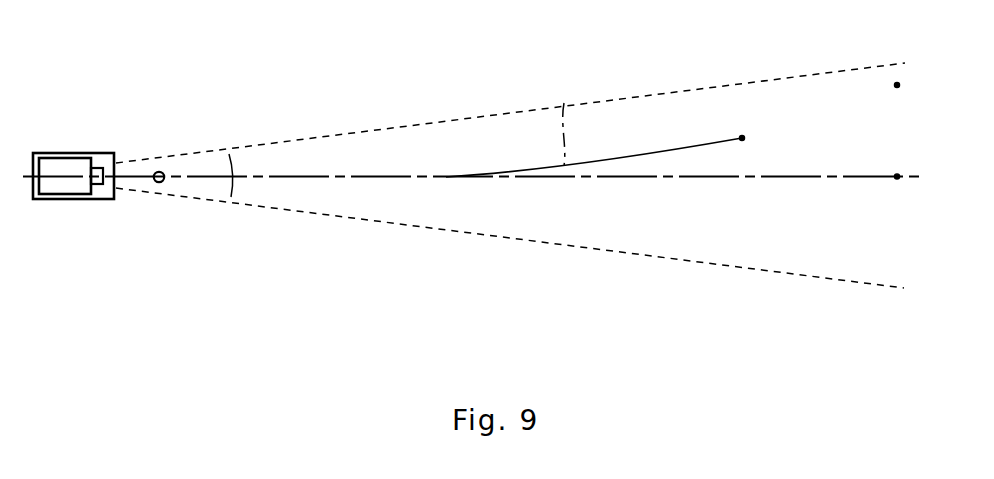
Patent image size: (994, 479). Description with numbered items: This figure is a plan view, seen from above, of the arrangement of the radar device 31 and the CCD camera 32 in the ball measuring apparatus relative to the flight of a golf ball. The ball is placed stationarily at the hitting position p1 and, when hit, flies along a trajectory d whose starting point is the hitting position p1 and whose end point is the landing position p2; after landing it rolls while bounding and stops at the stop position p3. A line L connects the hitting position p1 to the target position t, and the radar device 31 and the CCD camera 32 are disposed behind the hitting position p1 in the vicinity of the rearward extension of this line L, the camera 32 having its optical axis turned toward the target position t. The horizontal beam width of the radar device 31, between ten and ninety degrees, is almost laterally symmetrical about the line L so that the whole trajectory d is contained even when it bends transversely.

The radar device 31 is at (66, 199).
The CCD camera 32 is at (58, 160).
The hitting position p1 is at (160, 170).
The landing position p2 is at (742, 136).
The stop position p3 is at (897, 84).
The trajectory d is at (563, 120).
The line connecting the hitting position to the target position L is at (730, 178).
The target position t is at (899, 178).